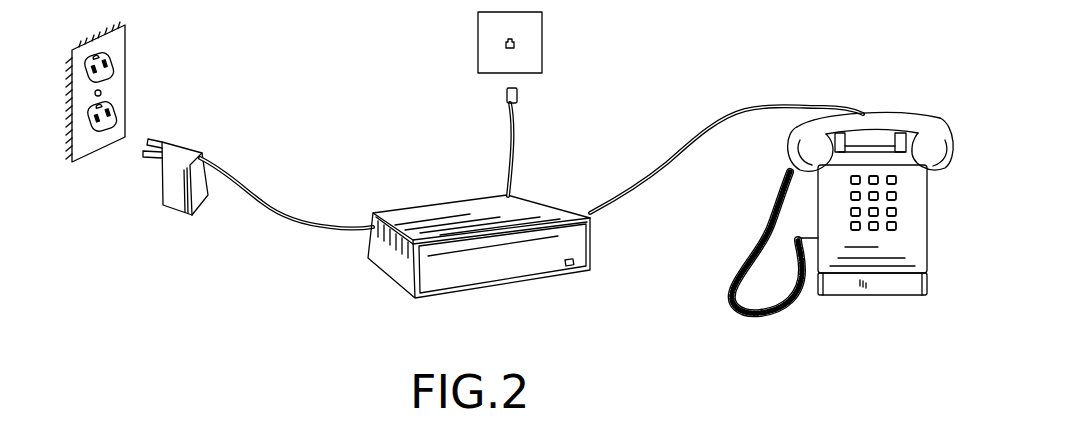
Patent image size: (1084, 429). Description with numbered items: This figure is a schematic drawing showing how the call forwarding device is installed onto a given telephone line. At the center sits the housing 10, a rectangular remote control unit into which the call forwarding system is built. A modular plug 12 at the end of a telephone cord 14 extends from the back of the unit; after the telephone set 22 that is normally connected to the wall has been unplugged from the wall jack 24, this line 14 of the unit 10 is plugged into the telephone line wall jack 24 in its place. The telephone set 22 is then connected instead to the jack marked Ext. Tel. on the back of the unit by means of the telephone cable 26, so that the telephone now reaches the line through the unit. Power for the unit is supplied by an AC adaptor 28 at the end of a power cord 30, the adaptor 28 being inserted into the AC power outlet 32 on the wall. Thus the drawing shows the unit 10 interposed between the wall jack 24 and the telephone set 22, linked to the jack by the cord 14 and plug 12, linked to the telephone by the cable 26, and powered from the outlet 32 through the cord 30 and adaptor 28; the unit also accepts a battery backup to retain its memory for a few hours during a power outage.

The housing 10 is at (567, 291).
The modular plug 12 is at (507, 97).
The telephone cord 14 is at (522, 140).
The telephone set 22 is at (883, 297).
The wall jack 24 is at (537, 27).
The telephone cable 26 is at (773, 113).
The AC adaptor 28 is at (183, 153).
The power cord 30 is at (312, 230).
The AC power outlet 32 is at (118, 37).